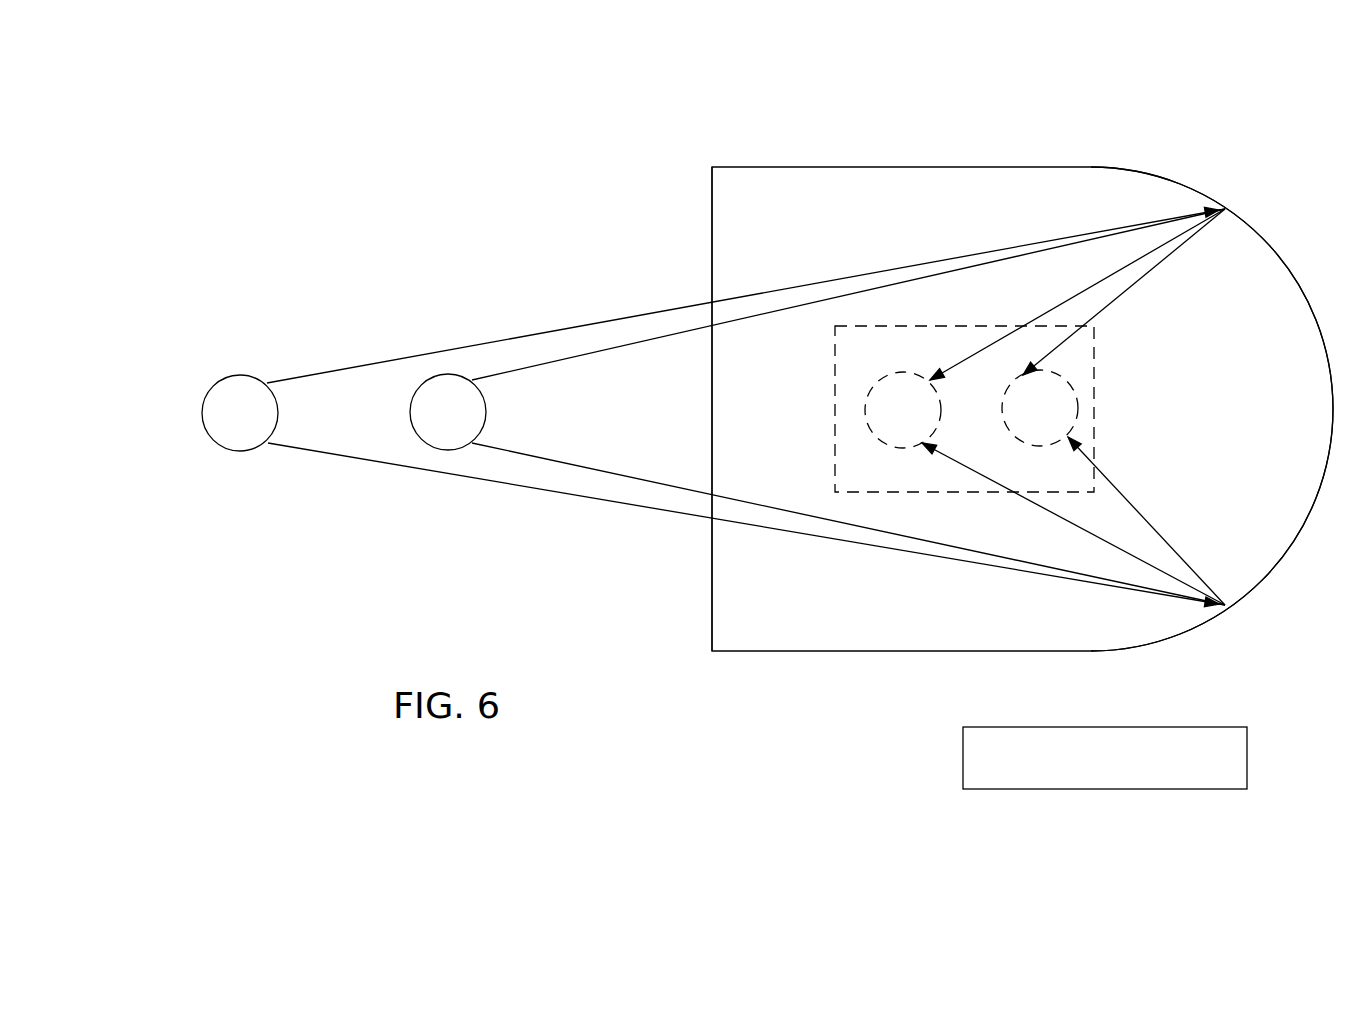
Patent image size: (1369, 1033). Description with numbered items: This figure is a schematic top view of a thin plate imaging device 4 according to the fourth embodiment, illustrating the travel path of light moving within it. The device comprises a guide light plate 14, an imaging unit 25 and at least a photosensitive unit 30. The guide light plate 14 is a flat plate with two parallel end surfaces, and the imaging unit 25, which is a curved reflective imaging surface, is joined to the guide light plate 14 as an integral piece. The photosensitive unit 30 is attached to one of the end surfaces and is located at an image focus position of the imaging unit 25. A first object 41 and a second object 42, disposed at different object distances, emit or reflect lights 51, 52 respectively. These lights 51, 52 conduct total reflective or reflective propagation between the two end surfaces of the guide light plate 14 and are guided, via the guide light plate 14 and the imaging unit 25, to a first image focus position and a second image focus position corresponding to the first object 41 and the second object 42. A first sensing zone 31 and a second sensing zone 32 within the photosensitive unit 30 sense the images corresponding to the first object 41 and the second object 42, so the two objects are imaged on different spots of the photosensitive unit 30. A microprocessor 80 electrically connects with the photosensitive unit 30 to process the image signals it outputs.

The thin plate imaging device 4 is at (1032, 148).
The guide light plate 14 is at (744, 192).
The imaging unit 25 is at (1333, 422).
The photosensitive unit 30 is at (853, 478).
The first sensing zone 31 is at (910, 430).
The second sensing zone 32 is at (1037, 430).
The first object 41 is at (226, 432).
The second object 42 is at (437, 430).
The light 51 is at (360, 363).
The light 52 is at (593, 355).
The microprocessor 80 is at (1240, 740).